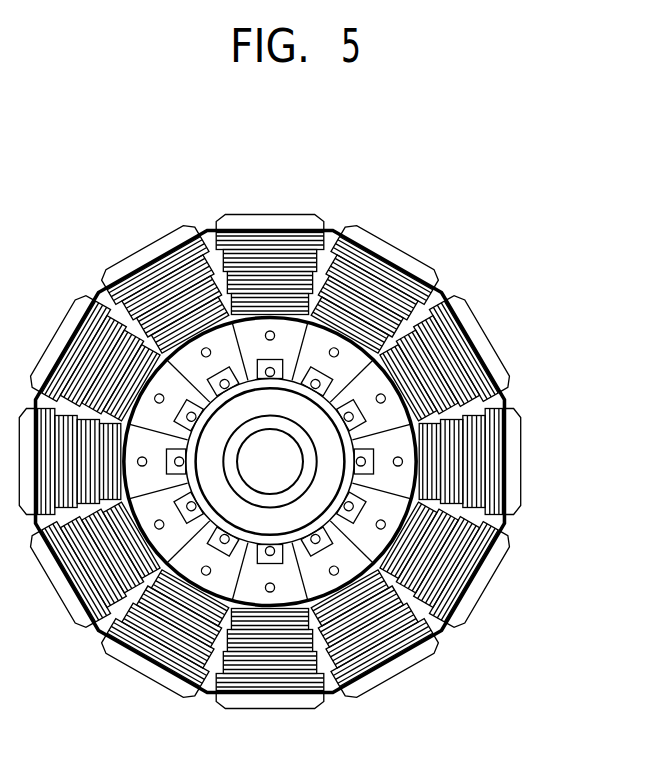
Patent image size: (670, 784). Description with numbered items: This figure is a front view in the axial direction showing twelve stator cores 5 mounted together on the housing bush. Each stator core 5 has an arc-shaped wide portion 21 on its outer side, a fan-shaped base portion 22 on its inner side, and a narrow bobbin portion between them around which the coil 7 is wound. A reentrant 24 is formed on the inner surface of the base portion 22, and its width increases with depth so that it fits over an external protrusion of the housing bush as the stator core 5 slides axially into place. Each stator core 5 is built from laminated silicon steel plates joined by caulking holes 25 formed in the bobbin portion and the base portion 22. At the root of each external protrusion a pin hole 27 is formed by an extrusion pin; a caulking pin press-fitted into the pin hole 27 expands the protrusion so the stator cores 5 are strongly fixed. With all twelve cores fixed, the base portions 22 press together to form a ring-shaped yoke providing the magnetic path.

The stator core 5 is at (246, 203).
The arc-shaped wide portion 21 is at (289, 222).
The base portion 22 is at (243, 343).
The caulking hole 25 is at (274, 332).
The coil 7 is at (303, 332).
The reentrant 24 is at (412, 273).
The pin hole 27 is at (330, 372).